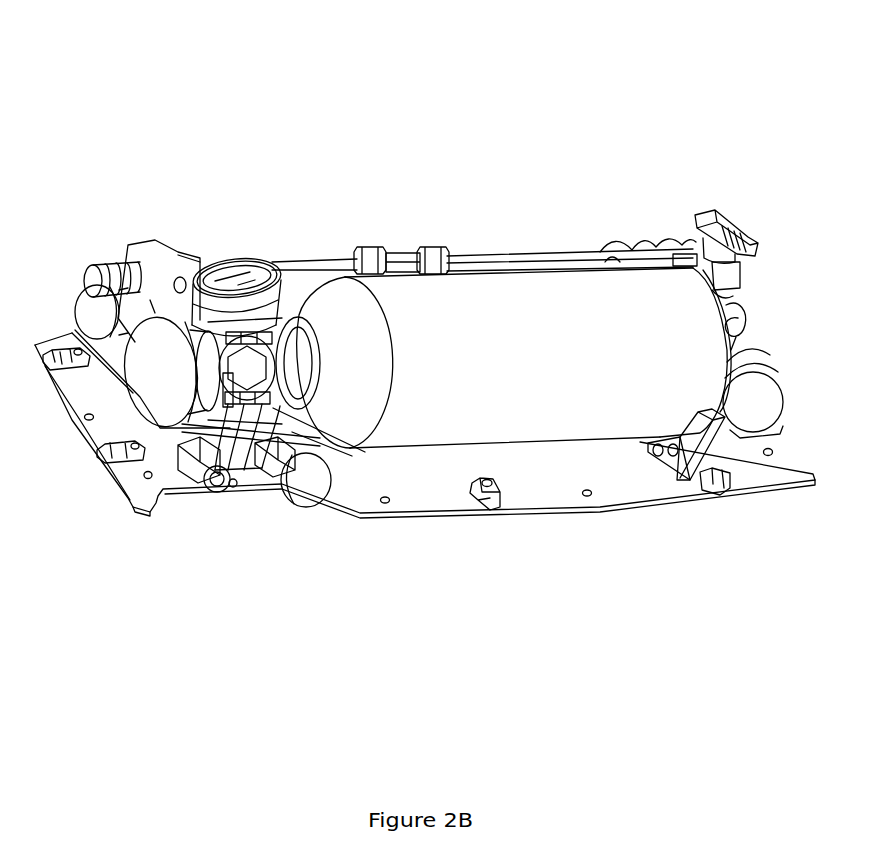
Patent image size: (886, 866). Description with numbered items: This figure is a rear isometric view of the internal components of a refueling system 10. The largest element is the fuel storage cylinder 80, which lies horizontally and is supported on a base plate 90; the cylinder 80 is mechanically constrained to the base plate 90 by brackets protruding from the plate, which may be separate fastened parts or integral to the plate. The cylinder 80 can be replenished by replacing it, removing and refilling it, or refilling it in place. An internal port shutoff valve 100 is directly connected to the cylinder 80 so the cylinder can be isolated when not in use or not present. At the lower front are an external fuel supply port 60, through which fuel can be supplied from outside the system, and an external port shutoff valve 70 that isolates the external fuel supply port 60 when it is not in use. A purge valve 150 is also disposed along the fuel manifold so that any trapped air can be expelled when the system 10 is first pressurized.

The refueling system 10 is at (438, 167).
The external fuel supply port 60 is at (205, 473).
The external port shutoff valve 70 is at (292, 497).
The fuel storage cylinder 80 is at (502, 272).
The base plate 90 is at (442, 513).
The internal port shutoff valve 100 is at (77, 302).
The purge valve 150 is at (93, 262).